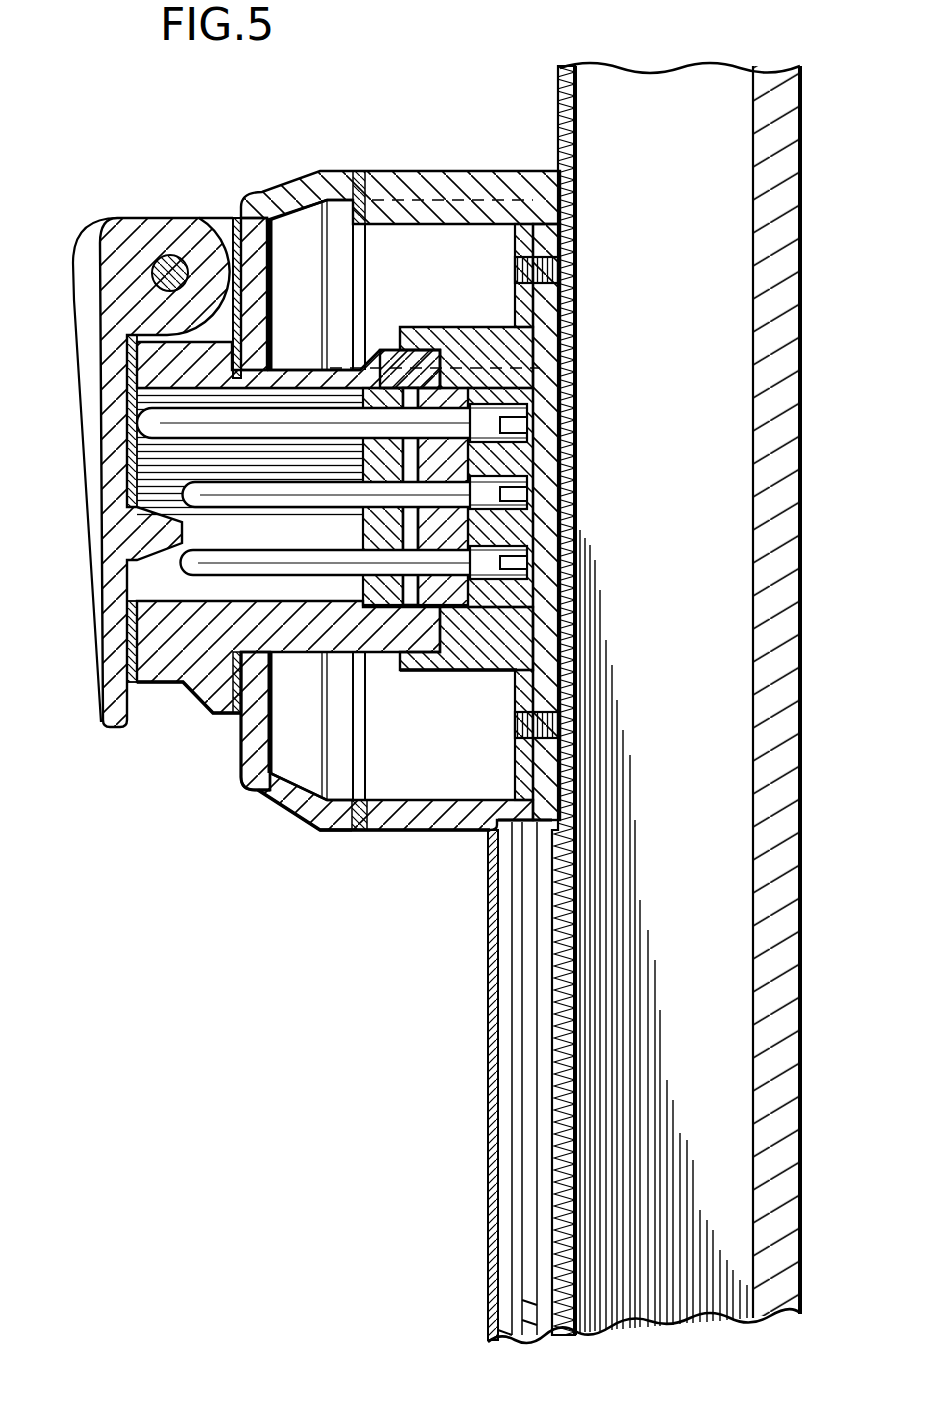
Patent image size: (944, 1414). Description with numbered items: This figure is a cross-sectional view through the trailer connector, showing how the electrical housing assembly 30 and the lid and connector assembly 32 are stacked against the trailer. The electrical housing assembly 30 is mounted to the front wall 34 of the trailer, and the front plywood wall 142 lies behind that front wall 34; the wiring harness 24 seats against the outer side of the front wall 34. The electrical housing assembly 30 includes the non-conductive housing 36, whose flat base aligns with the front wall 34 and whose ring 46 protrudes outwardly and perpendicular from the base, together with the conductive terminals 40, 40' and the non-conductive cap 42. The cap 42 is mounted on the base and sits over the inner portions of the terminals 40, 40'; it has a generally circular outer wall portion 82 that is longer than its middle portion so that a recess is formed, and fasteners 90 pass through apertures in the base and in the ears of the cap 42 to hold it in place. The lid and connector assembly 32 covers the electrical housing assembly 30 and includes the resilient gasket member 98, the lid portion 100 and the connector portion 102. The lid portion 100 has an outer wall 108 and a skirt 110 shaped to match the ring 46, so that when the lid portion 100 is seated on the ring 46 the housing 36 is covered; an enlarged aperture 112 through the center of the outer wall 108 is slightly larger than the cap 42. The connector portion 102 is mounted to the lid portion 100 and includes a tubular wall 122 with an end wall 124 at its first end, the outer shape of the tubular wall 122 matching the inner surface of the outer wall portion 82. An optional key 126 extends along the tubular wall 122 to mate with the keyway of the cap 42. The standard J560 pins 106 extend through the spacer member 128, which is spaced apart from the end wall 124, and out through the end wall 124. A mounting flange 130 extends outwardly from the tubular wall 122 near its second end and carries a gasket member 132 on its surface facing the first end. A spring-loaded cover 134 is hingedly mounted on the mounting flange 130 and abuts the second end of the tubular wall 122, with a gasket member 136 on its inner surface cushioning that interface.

The wiring harness 24 is at (490, 1090).
The electrical housing assembly 30 is at (475, 162).
The lid and connector assembly 32 is at (322, 160).
The front wall 34 is at (575, 993).
The housing 36 is at (420, 840).
The conductive terminal 40 is at (570, 482).
The conductive terminal 40' is at (561, 455).
The cap 42 is at (483, 674).
The ring 46 is at (457, 835).
The outer wall portion 82 is at (407, 678).
The fasteners 90 is at (518, 262).
The resilient gasket member 98 is at (363, 822).
The lid portion 100 is at (282, 823).
The connector portion 102 is at (163, 635).
The pins 106 is at (212, 567).
The outer wall 108 is at (250, 758).
The skirt 110 is at (343, 822).
The aperture 112 is at (278, 635).
The tubular wall 122 is at (135, 715).
The end wall 124 is at (470, 592).
The key 126 is at (378, 348).
The spacer member 128 is at (442, 530).
The mounting flange 130 is at (197, 668).
The gasket member 132 is at (238, 213).
The cover 134 is at (113, 368).
The gasket member 136 is at (130, 652).
The front plywood wall 142 is at (753, 265).